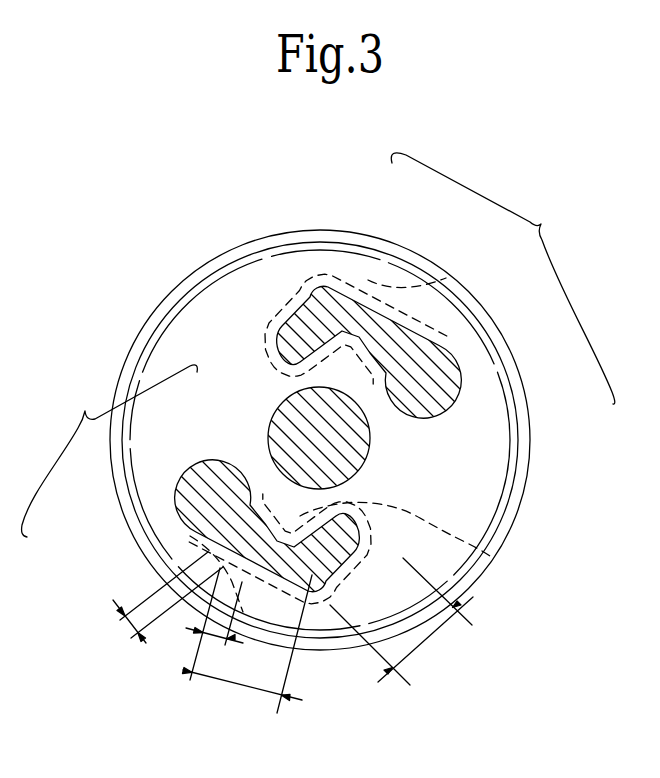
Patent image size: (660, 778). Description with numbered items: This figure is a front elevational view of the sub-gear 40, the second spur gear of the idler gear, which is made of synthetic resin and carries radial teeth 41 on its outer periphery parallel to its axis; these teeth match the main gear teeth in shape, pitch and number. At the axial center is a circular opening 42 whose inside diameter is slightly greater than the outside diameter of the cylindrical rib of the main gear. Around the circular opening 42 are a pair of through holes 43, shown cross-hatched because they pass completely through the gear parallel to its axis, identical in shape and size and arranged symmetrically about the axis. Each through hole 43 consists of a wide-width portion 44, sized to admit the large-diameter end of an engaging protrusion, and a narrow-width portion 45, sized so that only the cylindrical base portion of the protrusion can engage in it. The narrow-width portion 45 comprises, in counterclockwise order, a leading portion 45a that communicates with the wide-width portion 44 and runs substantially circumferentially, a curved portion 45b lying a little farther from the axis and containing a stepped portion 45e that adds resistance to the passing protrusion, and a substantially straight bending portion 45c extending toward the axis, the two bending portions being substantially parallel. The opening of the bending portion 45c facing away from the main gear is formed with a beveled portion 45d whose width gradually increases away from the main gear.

The sub-gear 40 is at (204, 196).
The radial teeth 41 is at (181, 293).
The circular opening 42 is at (347, 447).
The through hole 43 is at (318, 345).
The wide-width portion 44 is at (448, 375).
The narrow-width portion 45 is at (357, 292).
The leading portion 45a is at (131, 628).
The curved portion 45b is at (248, 644).
The bending portion 45c is at (401, 621).
The beveled portion 45d is at (441, 283).
The stepped portion 45e is at (214, 624).